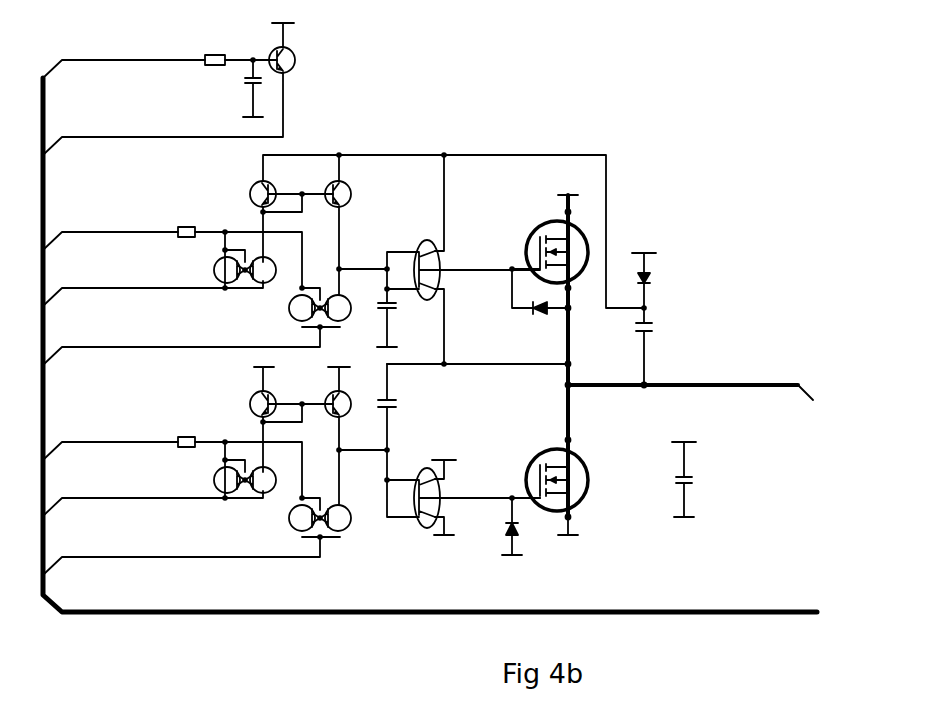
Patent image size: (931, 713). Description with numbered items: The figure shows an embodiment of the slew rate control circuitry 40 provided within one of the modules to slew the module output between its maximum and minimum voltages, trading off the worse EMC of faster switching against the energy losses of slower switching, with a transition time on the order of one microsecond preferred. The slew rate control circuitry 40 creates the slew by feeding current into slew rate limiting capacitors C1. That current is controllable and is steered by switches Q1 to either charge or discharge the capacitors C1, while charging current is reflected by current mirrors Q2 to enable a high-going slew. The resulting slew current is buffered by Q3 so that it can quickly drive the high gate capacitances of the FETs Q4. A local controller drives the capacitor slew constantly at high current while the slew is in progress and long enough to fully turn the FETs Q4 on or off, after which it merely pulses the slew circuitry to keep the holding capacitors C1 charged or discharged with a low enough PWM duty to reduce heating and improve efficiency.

The slew rate control circuitry 40 is at (430, 310).
The switches Q1 is at (282, 408).
The current mirrors Q2 is at (300, 335).
The buffer transistors Q3 is at (462, 345).
The FETs Q4 is at (557, 356).
The slew rate limiting capacitors C1 is at (399, 362).